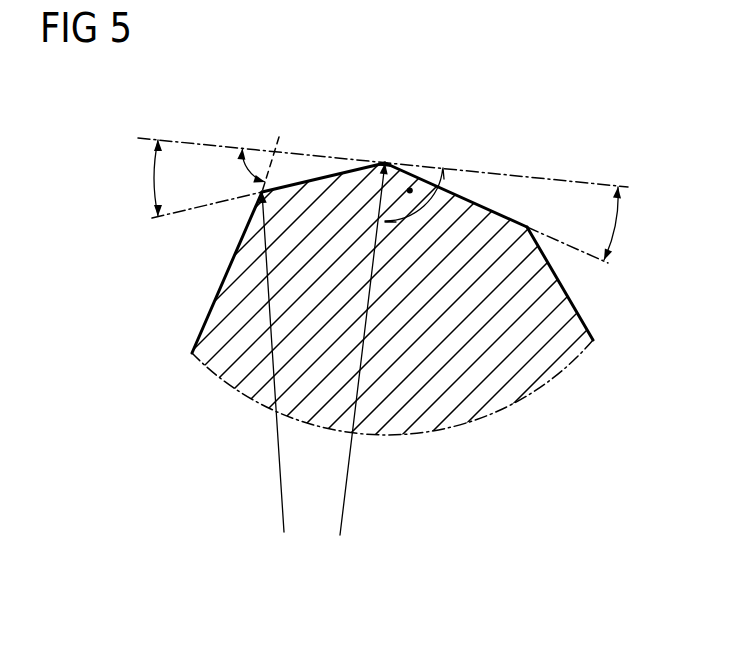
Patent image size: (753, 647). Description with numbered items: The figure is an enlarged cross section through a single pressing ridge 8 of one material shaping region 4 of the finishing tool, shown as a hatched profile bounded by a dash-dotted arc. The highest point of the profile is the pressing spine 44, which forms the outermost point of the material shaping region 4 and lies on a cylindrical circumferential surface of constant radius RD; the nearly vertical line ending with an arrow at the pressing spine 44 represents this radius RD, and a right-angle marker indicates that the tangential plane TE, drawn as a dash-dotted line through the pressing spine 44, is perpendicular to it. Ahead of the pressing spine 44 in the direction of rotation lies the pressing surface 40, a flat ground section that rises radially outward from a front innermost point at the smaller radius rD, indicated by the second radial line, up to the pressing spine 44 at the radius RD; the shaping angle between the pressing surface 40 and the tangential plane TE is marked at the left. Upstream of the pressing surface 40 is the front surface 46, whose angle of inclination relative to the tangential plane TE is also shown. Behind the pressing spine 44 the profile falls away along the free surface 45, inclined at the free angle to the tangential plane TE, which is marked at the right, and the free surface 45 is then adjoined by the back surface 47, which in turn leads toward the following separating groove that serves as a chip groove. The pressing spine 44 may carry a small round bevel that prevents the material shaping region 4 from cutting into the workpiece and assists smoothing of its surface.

The material shaping region 4 is at (376, 249).
The pressing ridge 8 is at (237, 318).
The pressing surface 40 is at (315, 180).
The pressing spine 44 is at (385, 161).
The free surface 45 is at (504, 215).
The front surface 46 is at (233, 258).
The back surface 47 is at (576, 303).
The tangential plane TE is at (557, 182).
The radius of the front innermost point of the pressing surface rD is at (278, 472).
The radius of the pressing spine RD is at (347, 480).